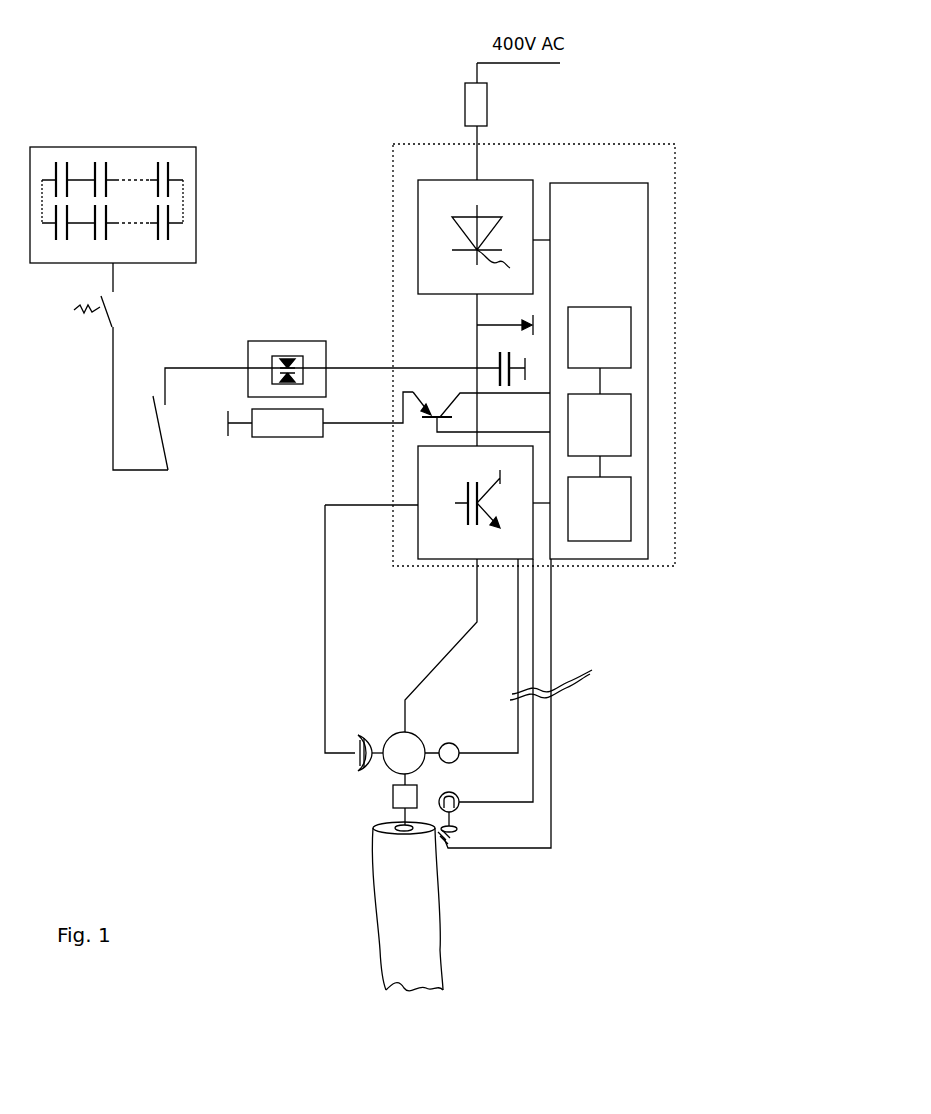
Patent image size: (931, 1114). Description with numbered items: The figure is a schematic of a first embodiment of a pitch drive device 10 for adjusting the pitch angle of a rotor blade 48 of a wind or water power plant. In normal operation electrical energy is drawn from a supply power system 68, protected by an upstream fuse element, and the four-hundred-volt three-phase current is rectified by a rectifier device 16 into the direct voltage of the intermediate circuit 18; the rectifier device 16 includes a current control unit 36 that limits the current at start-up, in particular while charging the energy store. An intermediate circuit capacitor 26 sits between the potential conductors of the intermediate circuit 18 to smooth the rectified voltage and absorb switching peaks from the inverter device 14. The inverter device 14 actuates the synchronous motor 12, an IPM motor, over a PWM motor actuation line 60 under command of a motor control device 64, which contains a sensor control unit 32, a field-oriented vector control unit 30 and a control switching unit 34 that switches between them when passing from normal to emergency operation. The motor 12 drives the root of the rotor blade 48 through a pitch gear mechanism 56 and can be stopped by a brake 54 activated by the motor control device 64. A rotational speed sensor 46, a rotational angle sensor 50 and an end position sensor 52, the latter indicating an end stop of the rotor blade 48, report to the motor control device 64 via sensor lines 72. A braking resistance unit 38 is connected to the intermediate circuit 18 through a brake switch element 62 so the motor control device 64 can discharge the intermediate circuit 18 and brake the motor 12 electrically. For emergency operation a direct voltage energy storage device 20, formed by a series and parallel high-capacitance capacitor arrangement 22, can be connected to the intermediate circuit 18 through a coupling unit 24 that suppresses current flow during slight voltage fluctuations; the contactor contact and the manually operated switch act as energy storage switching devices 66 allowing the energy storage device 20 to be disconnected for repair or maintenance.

The pitch drive device 10 is at (622, 78).
The synchronous motor 12 is at (416, 734).
The inverter device 14 is at (418, 545).
The rectifier device 16 is at (434, 237).
The current control unit 36 is at (418, 233).
The intermediate circuit 18 is at (476, 324).
The direct voltage energy storage device 20 is at (113, 177).
The high-capacitance capacitor arrangement 22 is at (110, 179).
The coupling unit 24 is at (308, 341).
The intermediate circuit capacitor 26 is at (497, 358).
The field-oriented vector control unit 30 is at (612, 349).
The sensor control unit 32 is at (612, 520).
The control switching unit 34 is at (612, 436).
The braking resistance unit 38 is at (291, 438).
The rotational speed sensor 46 is at (452, 743).
The rotor blade 48 is at (443, 926).
The rotational angle sensor 50 is at (461, 795).
The end position sensor 52 is at (446, 842).
The brake 54 is at (360, 735).
The pitch gear mechanism 56 is at (393, 800).
The motor actuation line 60 is at (453, 648).
The brake switch element 62 is at (420, 424).
The motor control device 64 is at (610, 234).
The energy storage switching devices 66 is at (70, 310).
The supply power system 68 is at (472, 63).
The sensor lines 72 is at (562, 680).